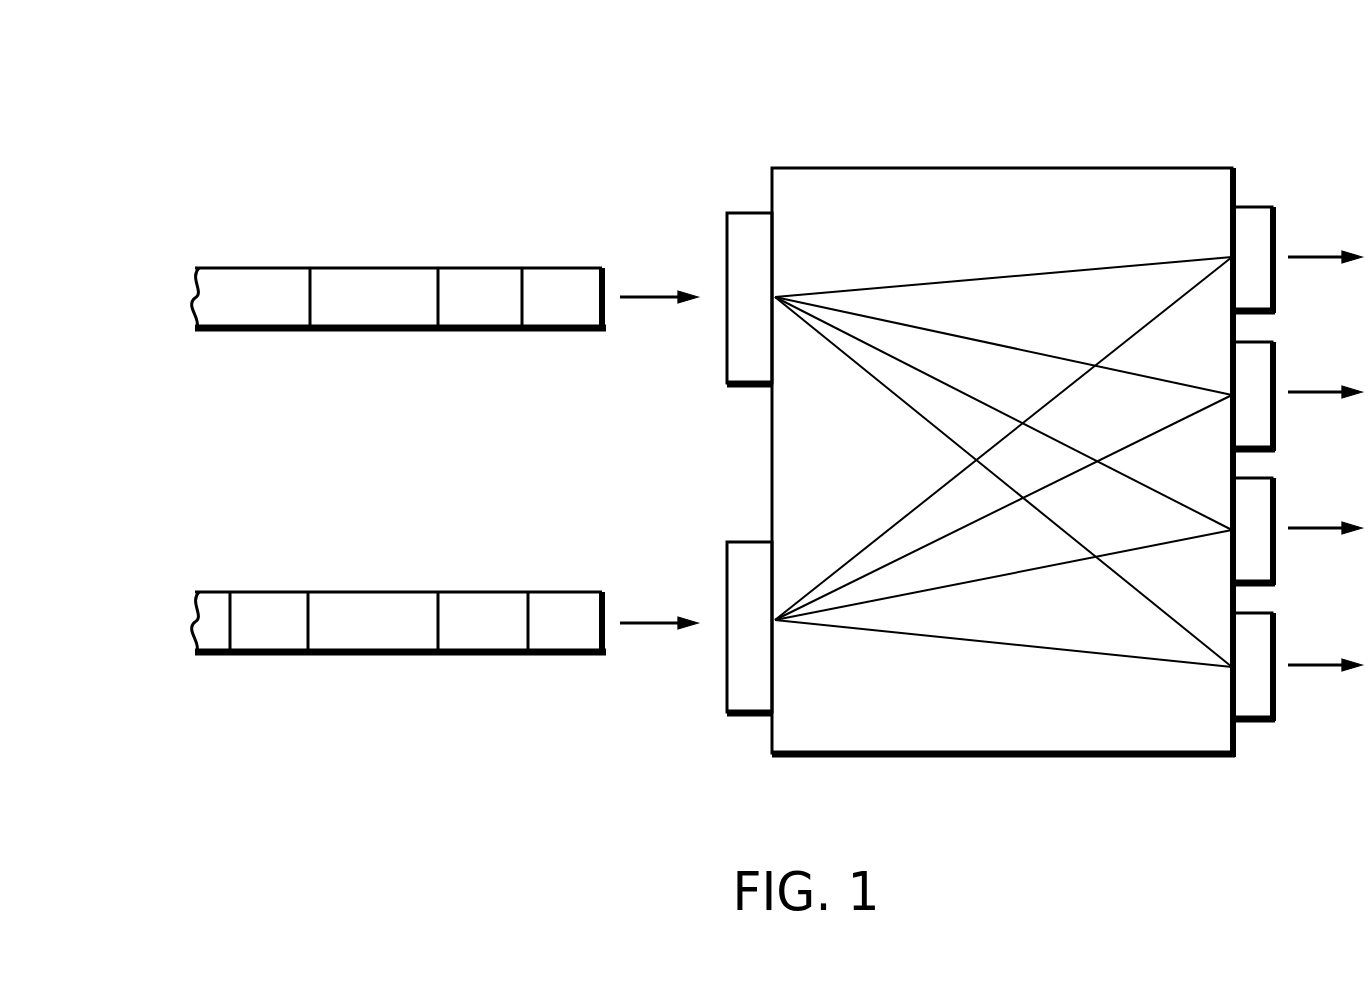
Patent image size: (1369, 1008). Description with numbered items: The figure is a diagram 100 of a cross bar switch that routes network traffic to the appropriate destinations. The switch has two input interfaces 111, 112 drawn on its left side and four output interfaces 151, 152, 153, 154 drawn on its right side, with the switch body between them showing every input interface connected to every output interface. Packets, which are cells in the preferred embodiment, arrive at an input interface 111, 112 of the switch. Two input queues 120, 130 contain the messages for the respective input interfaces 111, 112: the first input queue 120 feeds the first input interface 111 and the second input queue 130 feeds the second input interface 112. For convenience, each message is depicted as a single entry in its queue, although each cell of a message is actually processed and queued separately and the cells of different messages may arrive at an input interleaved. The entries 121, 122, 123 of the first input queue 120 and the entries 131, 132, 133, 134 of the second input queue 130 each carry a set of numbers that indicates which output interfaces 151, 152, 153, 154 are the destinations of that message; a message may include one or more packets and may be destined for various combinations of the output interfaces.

The diagram 100 is at (777, 411).
The input interface 111 is at (725, 378).
The input interface 112 is at (725, 704).
The input queue 120 is at (399, 287).
The queue entry 121 is at (560, 333).
The queue entry 122 is at (478, 333).
The queue entry 123 is at (390, 333).
The input queue 130 is at (399, 608).
The queue entry 131 is at (562, 657).
The queue entry 132 is at (478, 657).
The queue entry 133 is at (390, 657).
The queue entry 134 is at (275, 657).
The output interface 151 is at (1275, 204).
The output interface 152 is at (1275, 339).
The output interface 153 is at (1275, 473).
The output interface 154 is at (1275, 609).